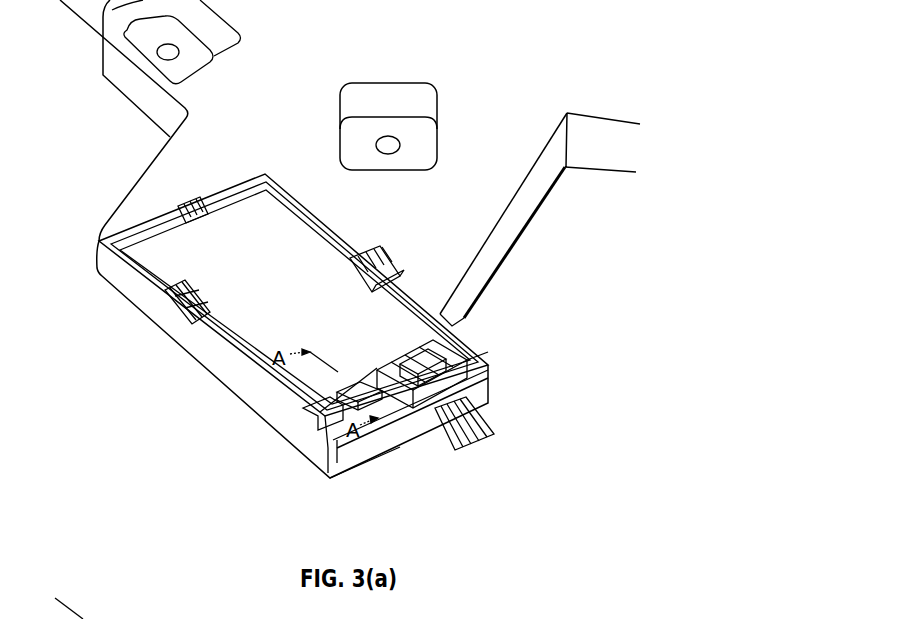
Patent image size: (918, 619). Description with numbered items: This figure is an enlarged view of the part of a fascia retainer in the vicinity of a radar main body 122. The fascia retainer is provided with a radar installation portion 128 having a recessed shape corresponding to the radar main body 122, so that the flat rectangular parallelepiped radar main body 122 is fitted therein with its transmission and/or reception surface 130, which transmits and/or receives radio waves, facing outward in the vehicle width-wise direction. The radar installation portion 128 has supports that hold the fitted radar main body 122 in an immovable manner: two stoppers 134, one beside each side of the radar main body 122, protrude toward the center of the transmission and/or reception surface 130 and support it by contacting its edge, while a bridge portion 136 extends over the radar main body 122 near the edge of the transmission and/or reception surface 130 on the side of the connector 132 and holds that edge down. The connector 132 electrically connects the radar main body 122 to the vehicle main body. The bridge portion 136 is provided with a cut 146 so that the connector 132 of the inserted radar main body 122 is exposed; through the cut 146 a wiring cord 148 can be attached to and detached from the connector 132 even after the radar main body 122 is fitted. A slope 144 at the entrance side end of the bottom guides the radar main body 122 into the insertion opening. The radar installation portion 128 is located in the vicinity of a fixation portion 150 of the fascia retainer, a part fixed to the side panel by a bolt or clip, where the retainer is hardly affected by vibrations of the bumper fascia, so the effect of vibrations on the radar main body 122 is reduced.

The radar main body 122 is at (308, 203).
The radar installation portion 128 is at (231, 196).
The transmission and/or reception surface 130 is at (272, 292).
The connector 132 is at (406, 440).
The stopper 134 is at (190, 281).
The bridge portion 136 is at (463, 317).
The slope 144 is at (351, 474).
The cut 146 is at (476, 393).
The wiring cord 148 is at (483, 420).
The fixation portion 150 is at (422, 142).